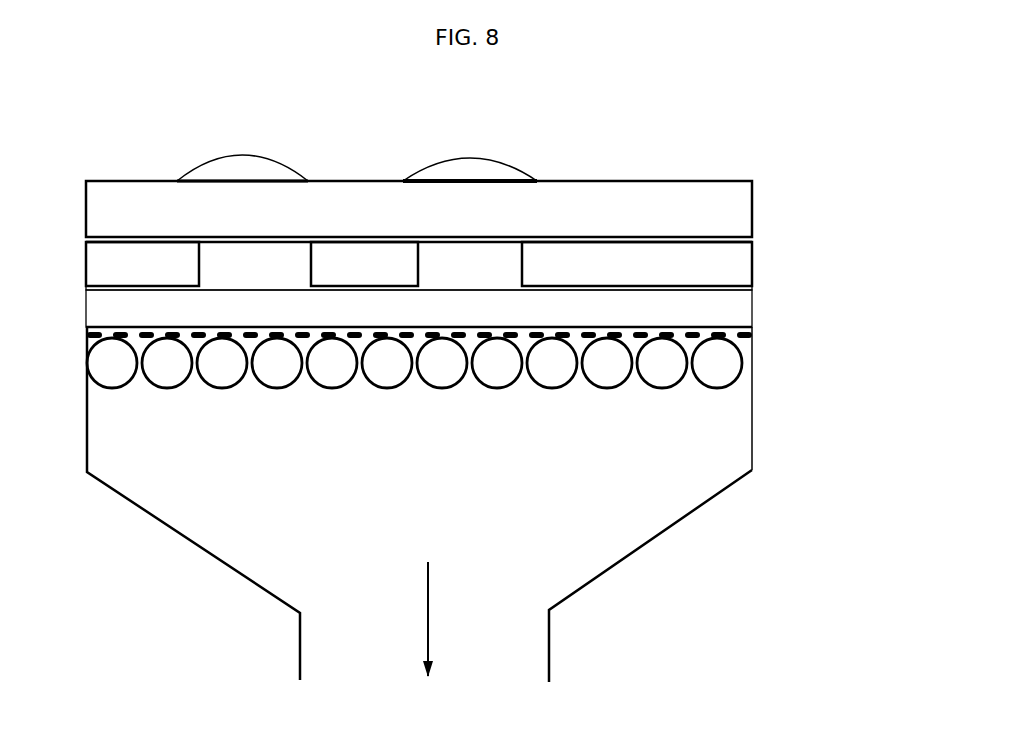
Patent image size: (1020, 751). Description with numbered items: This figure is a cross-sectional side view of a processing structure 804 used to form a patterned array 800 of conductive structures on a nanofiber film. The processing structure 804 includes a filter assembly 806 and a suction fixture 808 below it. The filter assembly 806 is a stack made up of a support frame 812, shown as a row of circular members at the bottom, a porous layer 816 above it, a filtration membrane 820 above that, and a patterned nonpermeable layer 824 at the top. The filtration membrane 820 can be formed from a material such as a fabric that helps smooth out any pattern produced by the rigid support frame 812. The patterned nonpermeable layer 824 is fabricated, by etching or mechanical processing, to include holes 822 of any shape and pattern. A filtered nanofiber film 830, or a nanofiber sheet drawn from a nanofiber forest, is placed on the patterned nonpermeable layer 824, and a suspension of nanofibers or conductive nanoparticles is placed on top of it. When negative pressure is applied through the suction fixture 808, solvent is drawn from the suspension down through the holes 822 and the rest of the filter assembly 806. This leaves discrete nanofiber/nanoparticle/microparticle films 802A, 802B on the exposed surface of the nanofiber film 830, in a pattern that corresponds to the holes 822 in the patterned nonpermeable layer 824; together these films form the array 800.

The array 800 is at (556, 169).
The nanofiber/nanoparticle/microparticle film 802A is at (273, 177).
The nanofiber/nanoparticle/microparticle film 802B is at (458, 173).
The processing structure 804 is at (472, 504).
The filter assembly 806 is at (78, 237).
The suction fixture 808 is at (683, 520).
The support frame 812 is at (750, 363).
The porous layer 816 is at (755, 334).
The filtration membrane 820 is at (755, 298).
The holes 822 is at (262, 287).
The patterned nonpermeable layer 824 is at (755, 265).
The nanofiber film 830 is at (755, 208).